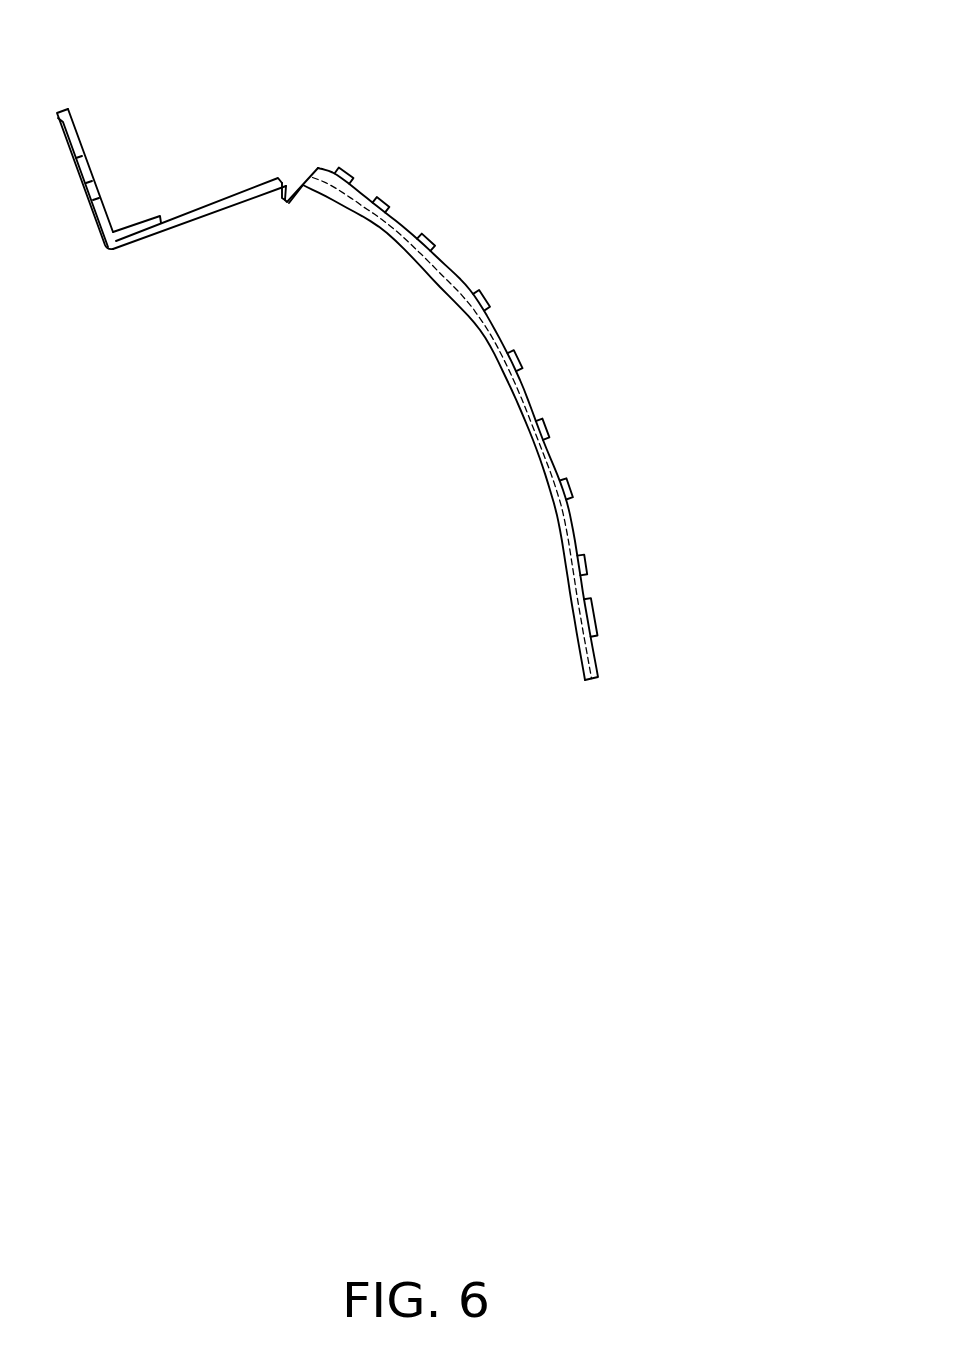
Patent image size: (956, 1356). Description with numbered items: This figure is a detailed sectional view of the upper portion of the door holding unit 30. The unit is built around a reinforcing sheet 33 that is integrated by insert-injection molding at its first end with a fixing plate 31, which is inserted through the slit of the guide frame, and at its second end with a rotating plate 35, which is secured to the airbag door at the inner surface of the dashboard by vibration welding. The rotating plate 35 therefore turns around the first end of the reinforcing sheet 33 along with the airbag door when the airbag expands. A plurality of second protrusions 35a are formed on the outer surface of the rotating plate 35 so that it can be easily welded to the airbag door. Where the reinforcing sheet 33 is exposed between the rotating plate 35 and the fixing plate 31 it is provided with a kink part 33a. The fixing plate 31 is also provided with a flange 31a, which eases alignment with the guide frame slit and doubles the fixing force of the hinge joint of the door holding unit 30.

The door holding unit 30 is at (305, 157).
The fixing plate 31 is at (98, 198).
The flange 31a is at (90, 168).
The reinforcing sheet 33 is at (218, 213).
The kink part 33a is at (281, 204).
The rotating plate 35 is at (360, 178).
The second protrusions 35a is at (482, 292).